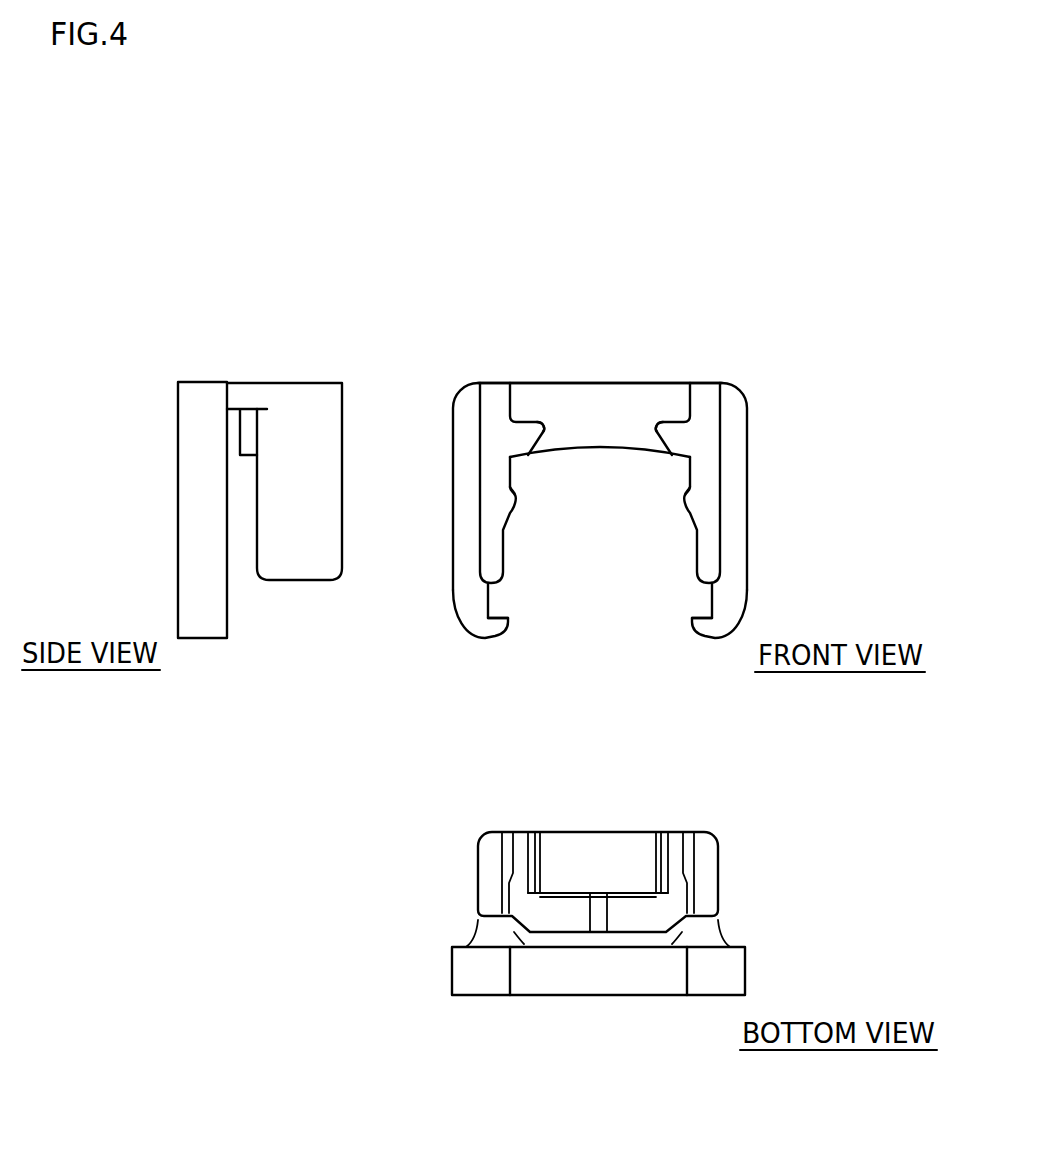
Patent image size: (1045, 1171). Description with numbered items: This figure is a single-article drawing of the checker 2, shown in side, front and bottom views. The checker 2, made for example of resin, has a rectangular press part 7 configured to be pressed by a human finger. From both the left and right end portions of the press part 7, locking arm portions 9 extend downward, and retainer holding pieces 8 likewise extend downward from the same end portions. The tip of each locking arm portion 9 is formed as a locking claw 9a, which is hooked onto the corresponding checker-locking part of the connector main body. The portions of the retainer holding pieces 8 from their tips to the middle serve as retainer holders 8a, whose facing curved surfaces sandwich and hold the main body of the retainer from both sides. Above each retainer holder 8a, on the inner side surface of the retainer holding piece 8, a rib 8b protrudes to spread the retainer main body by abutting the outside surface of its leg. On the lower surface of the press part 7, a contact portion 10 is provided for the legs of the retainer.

The checker 2 is at (845, 173).
The press part 7 is at (600, 381).
The retainer holding piece 8 is at (342, 470).
The retainer holder 8a is at (510, 520).
The rib 8b is at (544, 431).
The locking arm portion 9 is at (178, 498).
The locking claw 9a is at (513, 622).
The contact portion 10 is at (600, 451).